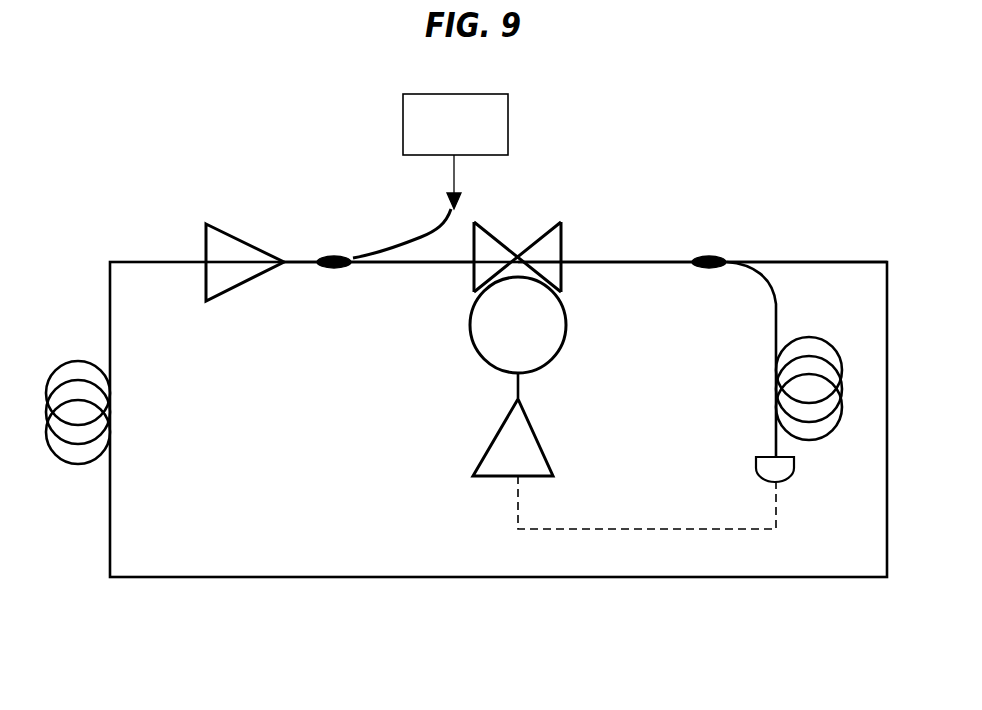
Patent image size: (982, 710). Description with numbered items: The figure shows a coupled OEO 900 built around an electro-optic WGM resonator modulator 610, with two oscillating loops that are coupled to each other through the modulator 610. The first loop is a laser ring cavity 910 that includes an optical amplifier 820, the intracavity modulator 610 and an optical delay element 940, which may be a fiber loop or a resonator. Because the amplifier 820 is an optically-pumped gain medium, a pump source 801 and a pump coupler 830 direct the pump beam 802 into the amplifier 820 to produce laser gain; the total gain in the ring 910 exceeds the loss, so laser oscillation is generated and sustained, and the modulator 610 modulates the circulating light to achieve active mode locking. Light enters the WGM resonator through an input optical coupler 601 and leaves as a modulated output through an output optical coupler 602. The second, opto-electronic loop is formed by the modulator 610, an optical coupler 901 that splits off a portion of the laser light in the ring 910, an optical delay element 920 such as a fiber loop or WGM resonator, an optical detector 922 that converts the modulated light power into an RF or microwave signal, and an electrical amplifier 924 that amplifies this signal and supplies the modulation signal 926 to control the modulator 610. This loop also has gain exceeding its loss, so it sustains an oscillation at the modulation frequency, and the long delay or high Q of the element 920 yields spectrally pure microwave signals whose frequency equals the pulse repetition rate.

The coupled OEO 900 is at (657, 128).
The laser ring cavity 910 is at (92, 603).
The optical amplifier 820 is at (228, 267).
The pump coupler 830 is at (327, 268).
The pump source 801 is at (455, 124).
The pump beam 802 is at (412, 237).
The input optical coupler 601 is at (472, 267).
The output optical coupler 602 is at (545, 266).
The WGM resonator modulator 610 is at (518, 325).
The modulation signal 926 is at (519, 387).
The electrical amplifier 924 is at (488, 440).
The optical coupler 901 is at (712, 255).
The optical delay element 920 is at (799, 333).
The optical detector 922 is at (783, 473).
The optical delay element 940 is at (113, 414).